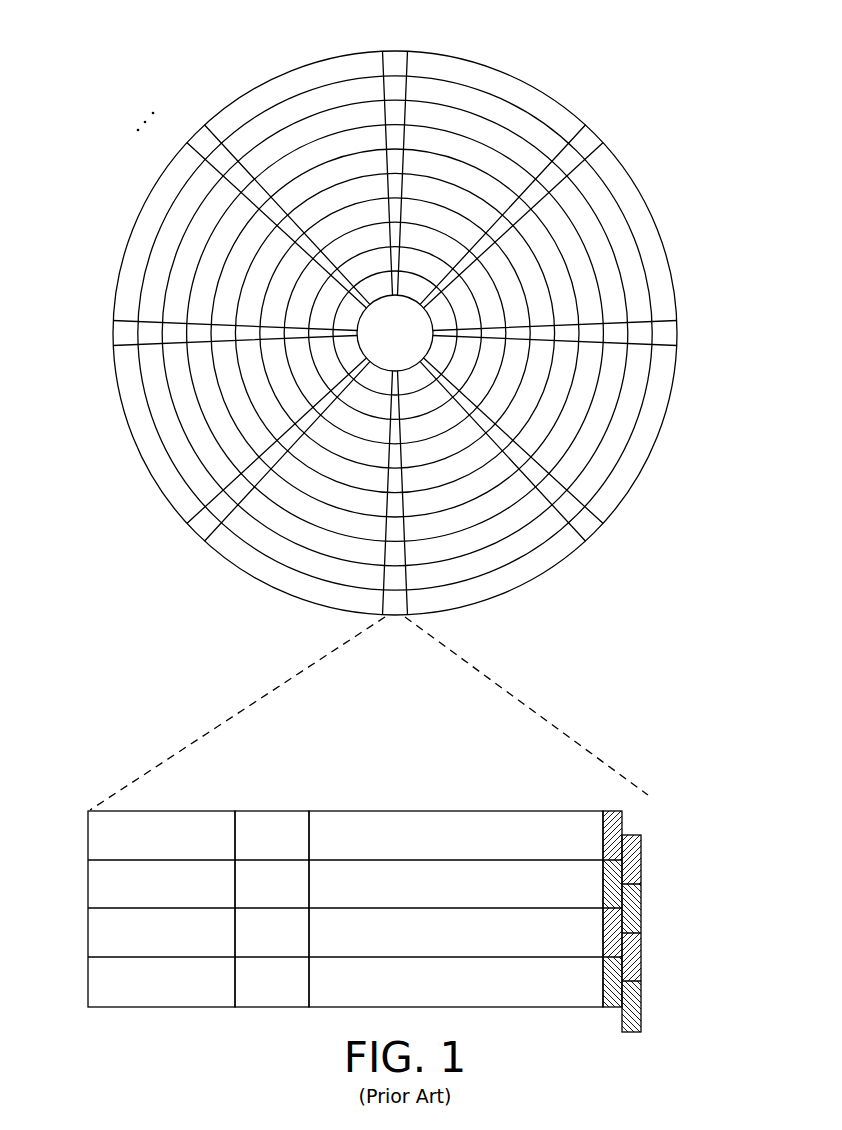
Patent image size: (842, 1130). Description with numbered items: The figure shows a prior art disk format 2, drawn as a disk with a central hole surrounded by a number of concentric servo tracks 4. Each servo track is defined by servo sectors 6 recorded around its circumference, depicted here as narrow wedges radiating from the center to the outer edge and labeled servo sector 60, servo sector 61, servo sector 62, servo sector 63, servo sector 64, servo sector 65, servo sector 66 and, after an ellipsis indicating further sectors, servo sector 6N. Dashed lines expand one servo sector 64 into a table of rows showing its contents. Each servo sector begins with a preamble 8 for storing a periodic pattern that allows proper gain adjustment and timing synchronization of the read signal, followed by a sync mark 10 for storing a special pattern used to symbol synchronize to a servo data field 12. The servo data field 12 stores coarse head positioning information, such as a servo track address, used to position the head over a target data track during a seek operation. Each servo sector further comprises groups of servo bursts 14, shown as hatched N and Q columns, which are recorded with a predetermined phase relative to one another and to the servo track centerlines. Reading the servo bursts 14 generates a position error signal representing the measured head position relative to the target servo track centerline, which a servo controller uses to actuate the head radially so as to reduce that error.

The disk format 2 is at (180, 50).
The servo track 4 is at (510, 90).
The servo sector 6 is at (395, 341).
The servo sector 6_0 60 is at (395, 60).
The servo sector 6_1 61 is at (585, 140).
The servo sector 6_2 62 is at (670, 334).
The servo sector 6_3 63 is at (586, 525).
The servo sector 6_4 64 is at (266, 678).
The servo sector 6_5 65 is at (200, 527).
The servo sector 6_6 66 is at (120, 333).
The servo sector 6_N 6N is at (197, 130).
The preamble 8 is at (170, 810).
The sync mark 10 is at (275, 810).
The servo data field 12 is at (446, 810).
The servo bursts 14 is at (641, 804).